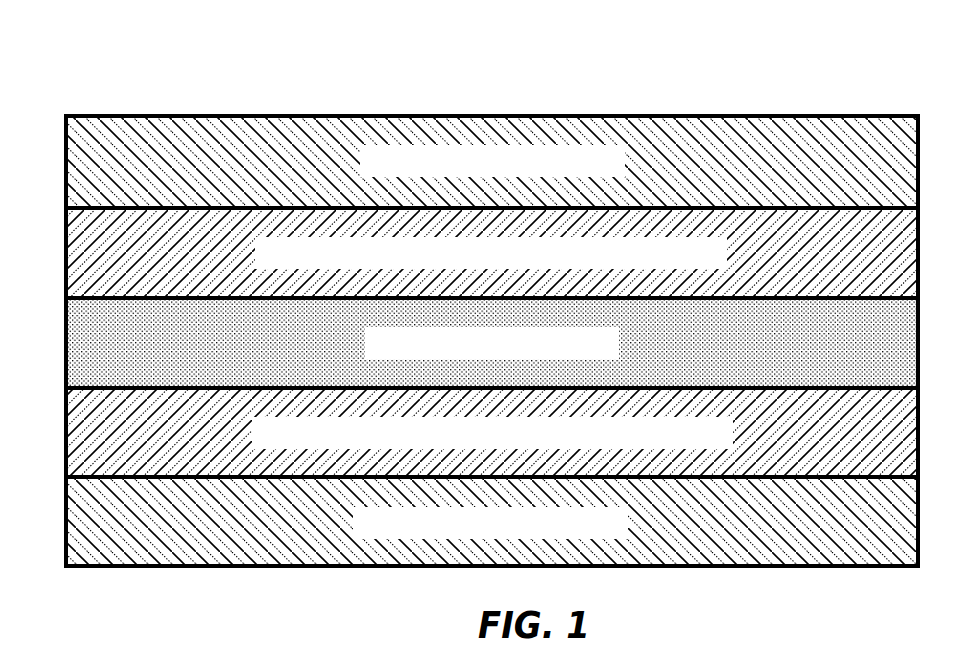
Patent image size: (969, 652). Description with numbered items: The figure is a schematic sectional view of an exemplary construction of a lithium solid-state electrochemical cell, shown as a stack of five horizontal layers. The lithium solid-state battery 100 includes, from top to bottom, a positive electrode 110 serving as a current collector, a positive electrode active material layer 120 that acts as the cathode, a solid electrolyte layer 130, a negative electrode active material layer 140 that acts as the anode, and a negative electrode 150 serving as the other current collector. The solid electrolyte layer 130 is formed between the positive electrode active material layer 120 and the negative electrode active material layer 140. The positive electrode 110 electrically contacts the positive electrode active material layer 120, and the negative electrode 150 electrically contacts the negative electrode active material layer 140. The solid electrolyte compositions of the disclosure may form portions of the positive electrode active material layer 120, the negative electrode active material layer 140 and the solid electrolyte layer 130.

The lithium solid-state battery 100 is at (117, 78).
The positive electrode 110 is at (859, 176).
The positive electrode active material layer 120 is at (859, 268).
The solid electrolyte layer 130 is at (859, 350).
The negative electrode active material layer 140 is at (859, 446).
The negative electrode 150 is at (859, 536).